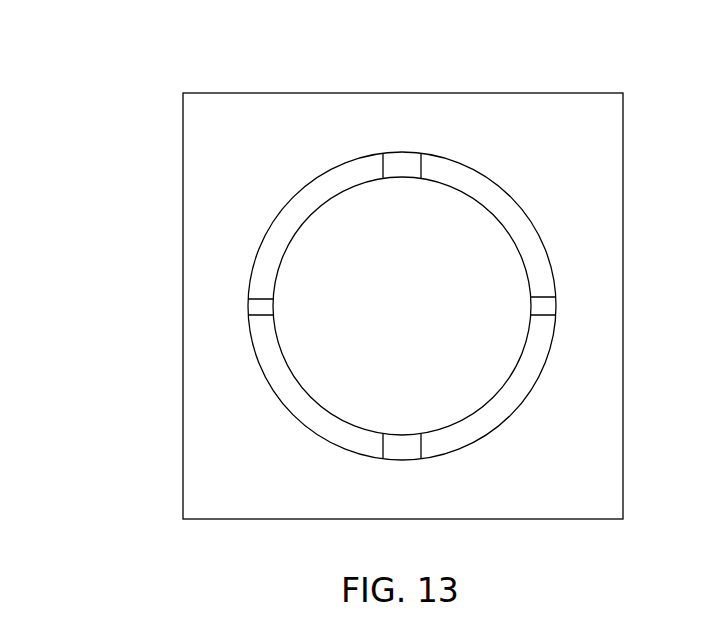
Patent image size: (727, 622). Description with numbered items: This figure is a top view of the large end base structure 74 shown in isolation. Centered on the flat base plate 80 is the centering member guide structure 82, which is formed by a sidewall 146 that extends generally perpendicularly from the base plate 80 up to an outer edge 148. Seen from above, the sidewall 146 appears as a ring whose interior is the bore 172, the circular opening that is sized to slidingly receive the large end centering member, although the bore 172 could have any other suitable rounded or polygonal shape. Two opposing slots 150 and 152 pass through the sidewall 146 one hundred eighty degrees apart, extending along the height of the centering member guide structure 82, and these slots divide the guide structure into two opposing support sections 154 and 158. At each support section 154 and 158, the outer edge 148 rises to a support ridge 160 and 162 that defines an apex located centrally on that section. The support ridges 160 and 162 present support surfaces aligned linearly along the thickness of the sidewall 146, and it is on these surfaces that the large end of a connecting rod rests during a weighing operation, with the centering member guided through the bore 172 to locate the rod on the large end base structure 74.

The large end base structure 74 is at (110, 100).
The base plate 80 is at (197, 481).
The centering member guide structure 82 is at (590, 262).
The sidewall 146 is at (512, 195).
The outer edge 148 is at (540, 247).
The slot 150 is at (400, 160).
The slot 152 is at (400, 451).
The support section 154 is at (240, 312).
The support section 158 is at (600, 357).
The support ridge 160 is at (258, 305).
The support ridge 162 is at (544, 305).
The bore 172 is at (340, 403).